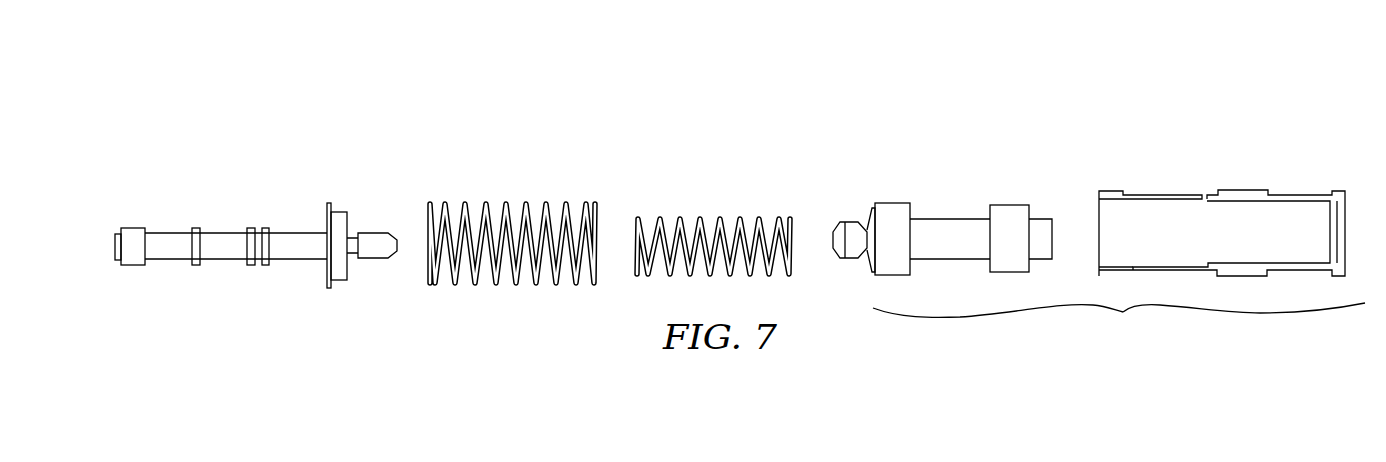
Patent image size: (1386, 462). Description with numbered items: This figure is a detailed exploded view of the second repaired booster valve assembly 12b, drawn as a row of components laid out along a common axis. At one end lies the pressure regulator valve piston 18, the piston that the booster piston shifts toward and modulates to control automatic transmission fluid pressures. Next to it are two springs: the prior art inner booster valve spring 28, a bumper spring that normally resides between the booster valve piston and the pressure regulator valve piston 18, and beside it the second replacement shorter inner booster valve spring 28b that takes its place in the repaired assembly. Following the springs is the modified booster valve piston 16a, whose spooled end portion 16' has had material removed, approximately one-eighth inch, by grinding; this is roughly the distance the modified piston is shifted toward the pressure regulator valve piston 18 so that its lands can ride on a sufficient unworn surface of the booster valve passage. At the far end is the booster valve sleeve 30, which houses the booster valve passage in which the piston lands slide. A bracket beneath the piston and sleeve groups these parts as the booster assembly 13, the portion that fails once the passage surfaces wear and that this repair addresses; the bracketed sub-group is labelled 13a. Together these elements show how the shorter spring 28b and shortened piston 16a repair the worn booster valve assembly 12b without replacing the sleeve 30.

The pressure regulator valve piston 18 is at (233, 181).
The second repaired booster valve assembly 12b is at (441, 95).
The inner booster valve spring 28 is at (520, 168).
The second replacement shorter inner booster valve spring 28b is at (729, 190).
The spooled end portion 16' is at (864, 199).
The modified booster valve piston 16a is at (925, 190).
The booster valve sleeve 30 is at (1197, 160).
The valve sub-assembly 13a is at (1123, 312).
The booster assembly 13 is at (1169, 4).